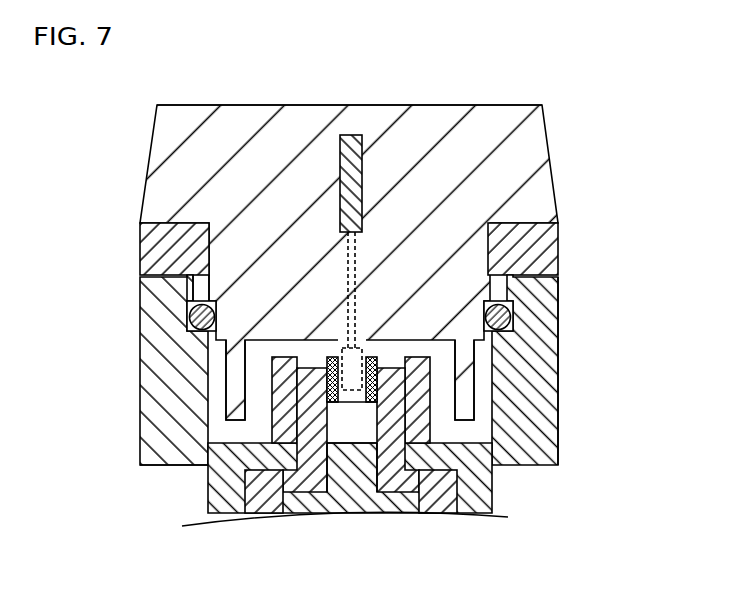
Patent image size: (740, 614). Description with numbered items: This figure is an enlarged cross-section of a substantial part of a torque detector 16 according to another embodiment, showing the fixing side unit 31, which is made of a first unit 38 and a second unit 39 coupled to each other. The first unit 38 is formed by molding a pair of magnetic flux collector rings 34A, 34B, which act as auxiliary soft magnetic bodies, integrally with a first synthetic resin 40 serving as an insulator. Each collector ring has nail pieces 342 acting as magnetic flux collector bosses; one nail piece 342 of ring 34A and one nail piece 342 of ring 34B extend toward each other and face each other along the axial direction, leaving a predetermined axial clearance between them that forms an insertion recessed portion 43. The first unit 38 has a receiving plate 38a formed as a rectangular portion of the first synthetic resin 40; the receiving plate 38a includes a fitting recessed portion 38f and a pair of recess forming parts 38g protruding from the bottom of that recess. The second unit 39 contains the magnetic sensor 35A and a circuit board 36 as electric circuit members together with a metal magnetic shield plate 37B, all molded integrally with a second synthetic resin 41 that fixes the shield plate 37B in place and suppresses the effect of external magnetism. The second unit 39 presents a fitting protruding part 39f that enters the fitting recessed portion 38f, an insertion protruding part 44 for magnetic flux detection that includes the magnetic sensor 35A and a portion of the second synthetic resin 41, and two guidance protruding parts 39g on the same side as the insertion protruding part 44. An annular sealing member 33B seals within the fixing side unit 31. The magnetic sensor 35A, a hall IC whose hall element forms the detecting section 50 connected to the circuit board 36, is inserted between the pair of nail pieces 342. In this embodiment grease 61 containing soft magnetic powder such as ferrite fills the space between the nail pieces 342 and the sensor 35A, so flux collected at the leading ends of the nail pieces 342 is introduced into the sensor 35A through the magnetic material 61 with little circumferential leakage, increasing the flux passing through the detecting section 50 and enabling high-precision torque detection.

The torque detector 16 is at (459, 85).
The fixing side unit 31 is at (556, 140).
The annular sealing member 33B is at (200, 318).
The magnetic flux collector ring 34A is at (432, 522).
The magnetic flux collector ring 34B is at (265, 514).
The nail piece 342 is at (272, 505).
The magnetic sensor 35A is at (358, 398).
The circuit board 36 is at (340, 148).
The magnetic shield plate 37B is at (559, 244).
The first unit 38 is at (141, 359).
The receiving plate 38a is at (545, 343).
The fitting recessed portion 38f is at (190, 300).
The recess forming part 38g is at (287, 398).
The second unit 39 is at (146, 184).
The fitting protruding part 39f is at (208, 300).
The guidance protruding part 39g is at (237, 398).
The first synthetic resin 40 is at (150, 456).
The second synthetic resin 41 is at (167, 136).
The insertion recessed portion 43 is at (338, 470).
The insertion protruding part 44 is at (342, 428).
The detecting section 50 is at (342, 348).
The grease 61 is at (330, 357).